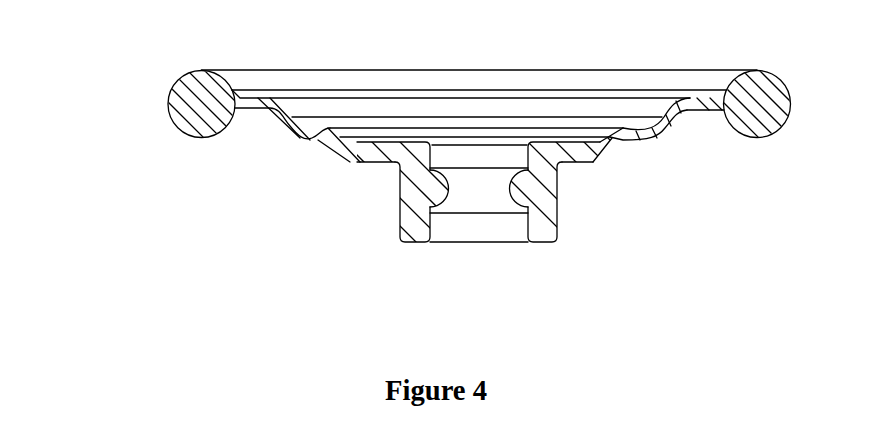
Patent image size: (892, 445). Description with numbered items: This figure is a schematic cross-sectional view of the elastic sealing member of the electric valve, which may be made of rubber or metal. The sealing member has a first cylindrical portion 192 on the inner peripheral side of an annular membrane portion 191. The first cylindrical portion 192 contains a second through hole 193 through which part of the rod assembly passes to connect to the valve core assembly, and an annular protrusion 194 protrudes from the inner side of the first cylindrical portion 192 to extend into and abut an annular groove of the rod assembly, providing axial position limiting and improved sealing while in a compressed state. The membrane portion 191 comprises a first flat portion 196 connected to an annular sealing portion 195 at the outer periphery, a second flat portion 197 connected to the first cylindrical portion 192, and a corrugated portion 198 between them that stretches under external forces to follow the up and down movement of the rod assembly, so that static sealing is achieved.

The membrane portion 191 is at (141, 155).
The first cylindrical portion 192 is at (402, 172).
The second through hole 193 is at (502, 218).
The annular protrusion 194 is at (442, 187).
The annular sealing portion 195 is at (213, 110).
The first flat portion 196 is at (256, 100).
The second flat portion 197 is at (358, 162).
The corrugated portion 198 is at (326, 130).